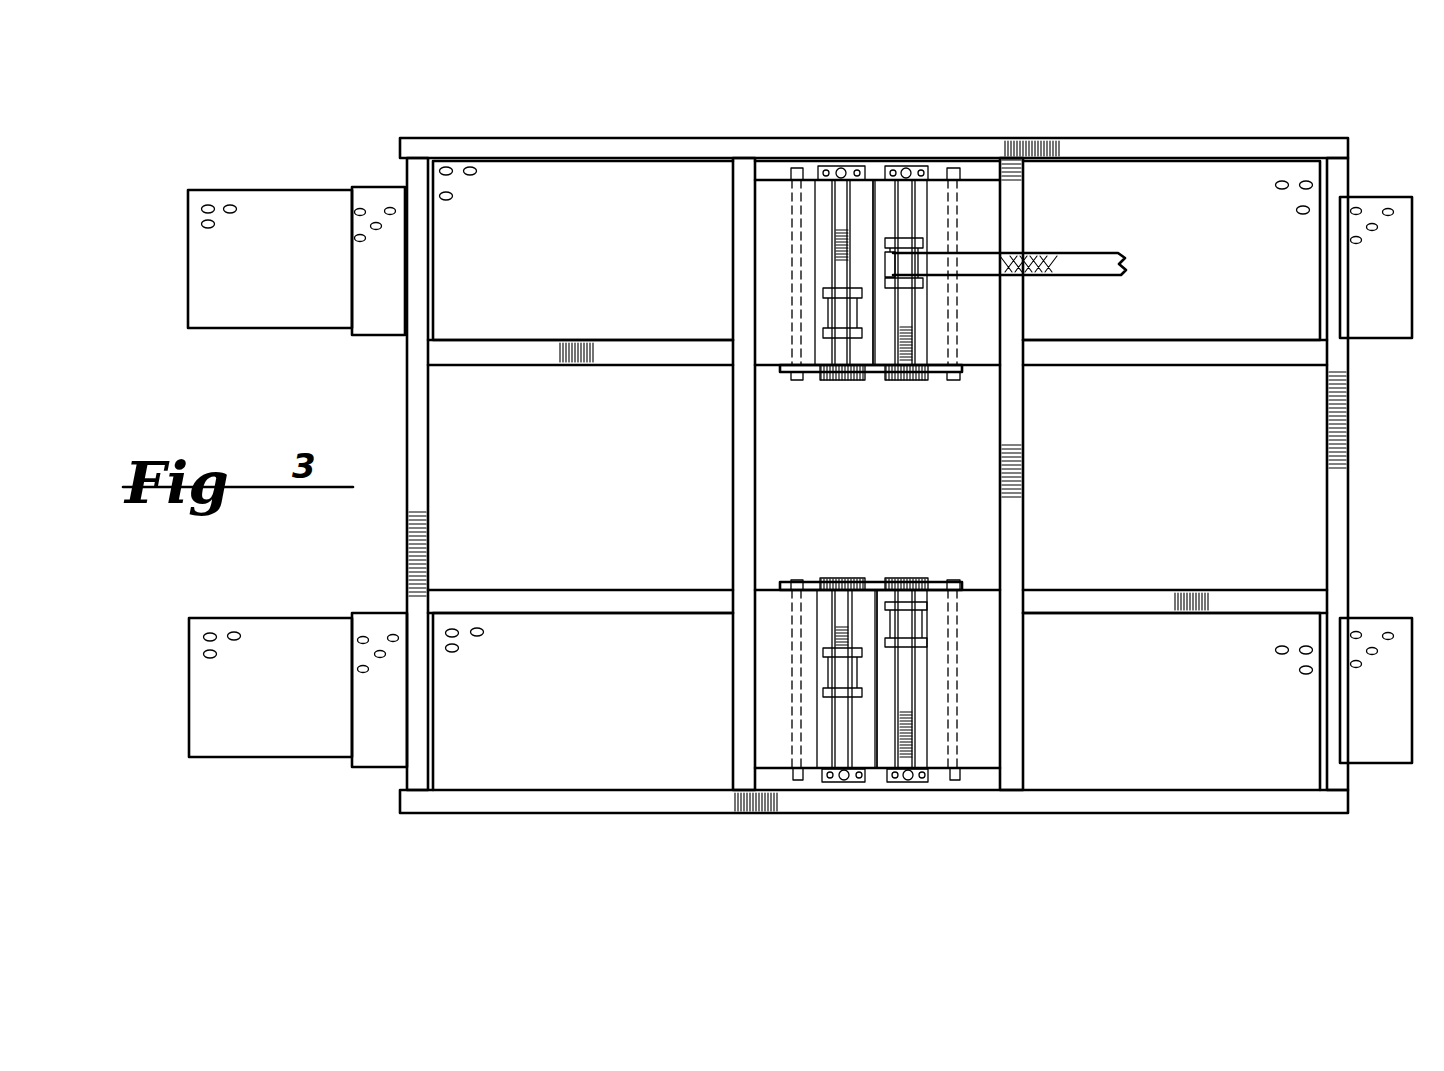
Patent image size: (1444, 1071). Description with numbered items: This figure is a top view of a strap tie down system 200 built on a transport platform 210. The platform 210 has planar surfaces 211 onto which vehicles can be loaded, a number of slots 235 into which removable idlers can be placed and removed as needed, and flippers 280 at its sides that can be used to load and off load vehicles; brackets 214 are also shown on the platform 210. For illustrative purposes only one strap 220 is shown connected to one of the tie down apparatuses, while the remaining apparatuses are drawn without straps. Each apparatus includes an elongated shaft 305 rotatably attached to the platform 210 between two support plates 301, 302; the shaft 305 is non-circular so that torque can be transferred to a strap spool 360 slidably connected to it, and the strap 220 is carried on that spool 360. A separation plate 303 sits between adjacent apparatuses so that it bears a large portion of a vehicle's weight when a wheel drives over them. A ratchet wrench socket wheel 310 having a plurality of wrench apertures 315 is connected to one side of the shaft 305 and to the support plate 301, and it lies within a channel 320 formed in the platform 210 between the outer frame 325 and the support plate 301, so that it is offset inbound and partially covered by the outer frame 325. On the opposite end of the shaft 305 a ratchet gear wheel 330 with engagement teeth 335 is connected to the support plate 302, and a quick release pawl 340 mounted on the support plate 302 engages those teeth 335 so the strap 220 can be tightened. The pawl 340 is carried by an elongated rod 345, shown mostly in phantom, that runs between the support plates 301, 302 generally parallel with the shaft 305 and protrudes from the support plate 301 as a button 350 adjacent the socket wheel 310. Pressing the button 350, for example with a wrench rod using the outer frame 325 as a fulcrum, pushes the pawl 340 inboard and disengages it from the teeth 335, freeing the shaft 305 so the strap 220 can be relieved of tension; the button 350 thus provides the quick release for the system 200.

The strap tie down system 200 is at (427, 76).
The platform 210 is at (803, 138).
The planar surfaces 211 is at (563, 178).
The mounting bracket 214 is at (355, 303).
The strap 220 is at (1097, 276).
The slots 235 is at (473, 168).
The flippers 280 is at (280, 190).
The support plate 301 is at (823, 282).
The support plate 302 is at (925, 348).
The separation plate 303 is at (875, 187).
The elongated shaft 305 is at (833, 198).
The ratchet wrench socket wheel 310 is at (827, 166).
The wrench apertures 315 is at (853, 166).
The channel 320 is at (990, 163).
The outer frame 325 is at (1138, 138).
The ratchet gear wheel 330 is at (809, 386).
The engagement teeth 335 is at (905, 382).
The quick release pawl 340 is at (793, 378).
The elongated rod 345 is at (790, 300).
The button 350 is at (958, 170).
The strap spool 360 is at (830, 233).